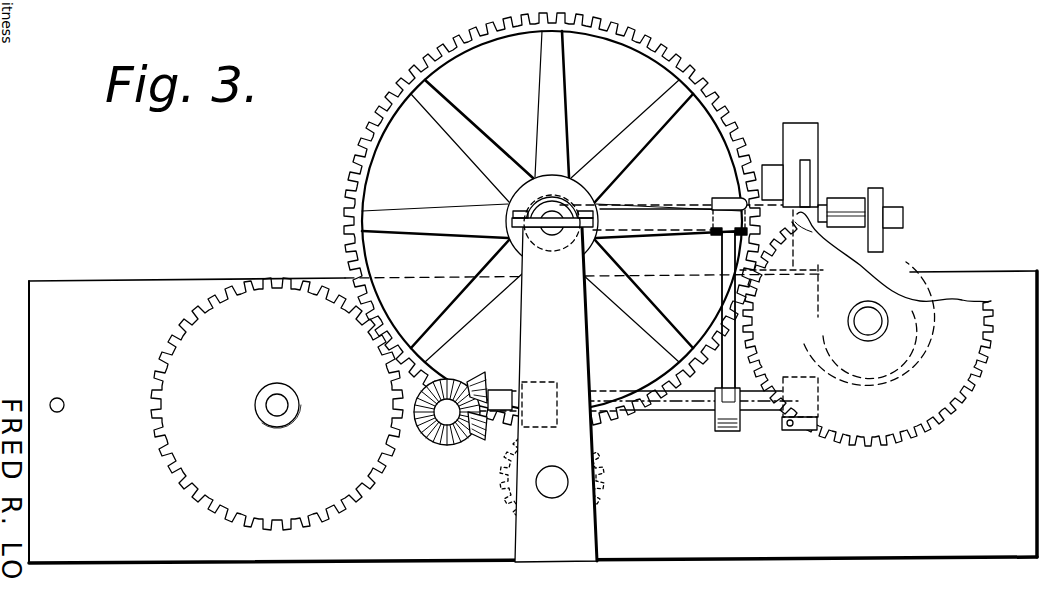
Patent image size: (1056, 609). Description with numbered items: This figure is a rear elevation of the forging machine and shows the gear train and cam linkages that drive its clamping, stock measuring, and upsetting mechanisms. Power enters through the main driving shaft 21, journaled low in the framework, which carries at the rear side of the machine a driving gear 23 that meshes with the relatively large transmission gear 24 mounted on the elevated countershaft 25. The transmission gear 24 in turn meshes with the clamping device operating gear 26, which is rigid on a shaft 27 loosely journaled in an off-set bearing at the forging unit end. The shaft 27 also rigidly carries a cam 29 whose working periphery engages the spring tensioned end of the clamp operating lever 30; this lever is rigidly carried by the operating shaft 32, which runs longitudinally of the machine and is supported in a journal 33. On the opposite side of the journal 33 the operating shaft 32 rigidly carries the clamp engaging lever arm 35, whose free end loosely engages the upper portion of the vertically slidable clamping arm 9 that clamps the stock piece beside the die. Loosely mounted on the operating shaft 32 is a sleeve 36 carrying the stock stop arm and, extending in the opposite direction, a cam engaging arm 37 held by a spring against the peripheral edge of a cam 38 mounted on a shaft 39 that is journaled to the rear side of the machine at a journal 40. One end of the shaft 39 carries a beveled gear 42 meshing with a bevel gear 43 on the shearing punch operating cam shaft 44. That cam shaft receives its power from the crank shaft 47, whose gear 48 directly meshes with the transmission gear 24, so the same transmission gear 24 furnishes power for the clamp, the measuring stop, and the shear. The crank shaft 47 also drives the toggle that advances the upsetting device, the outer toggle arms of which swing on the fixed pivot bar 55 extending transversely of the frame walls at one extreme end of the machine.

The clamping arm 9 is at (808, 140).
The main driving shaft 21 is at (563, 487).
The driving gear 23 is at (600, 478).
The transmission gear 24 is at (478, 156).
The countershaft 25 is at (560, 235).
The clamping device operating gear 26 is at (866, 323).
The shaft 27 is at (860, 324).
The cam 29 is at (890, 272).
The clamp operating lever 30 is at (895, 228).
The operating shaft 32 is at (890, 207).
The journal 33 is at (848, 205).
The clamp engaging lever arm 35 is at (806, 183).
The sleeve 36 is at (716, 198).
The cam engaging arm 37 is at (722, 297).
The cam 38 is at (730, 432).
The shaft 39 is at (662, 412).
The journal 40 is at (796, 430).
The beveled gear 42 is at (478, 428).
The bevel gear 43 is at (445, 440).
The shearing punch operating cam shaft 44 is at (542, 380).
The crank shaft 47 is at (284, 405).
The gear 48 is at (277, 404).
The fixed pivot bar 55 is at (62, 399).